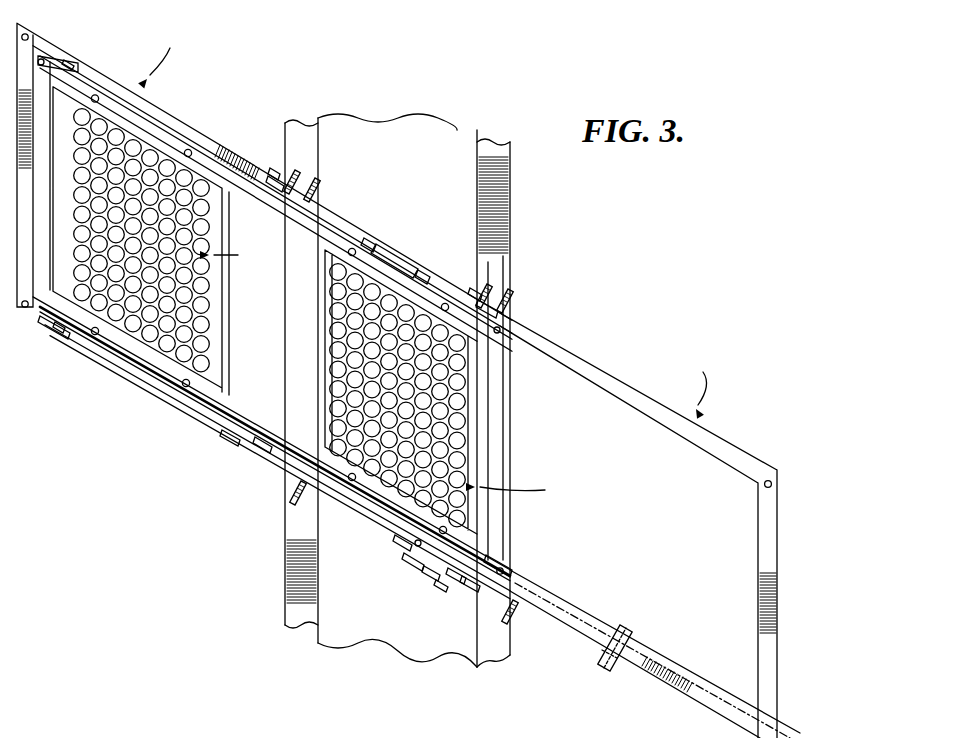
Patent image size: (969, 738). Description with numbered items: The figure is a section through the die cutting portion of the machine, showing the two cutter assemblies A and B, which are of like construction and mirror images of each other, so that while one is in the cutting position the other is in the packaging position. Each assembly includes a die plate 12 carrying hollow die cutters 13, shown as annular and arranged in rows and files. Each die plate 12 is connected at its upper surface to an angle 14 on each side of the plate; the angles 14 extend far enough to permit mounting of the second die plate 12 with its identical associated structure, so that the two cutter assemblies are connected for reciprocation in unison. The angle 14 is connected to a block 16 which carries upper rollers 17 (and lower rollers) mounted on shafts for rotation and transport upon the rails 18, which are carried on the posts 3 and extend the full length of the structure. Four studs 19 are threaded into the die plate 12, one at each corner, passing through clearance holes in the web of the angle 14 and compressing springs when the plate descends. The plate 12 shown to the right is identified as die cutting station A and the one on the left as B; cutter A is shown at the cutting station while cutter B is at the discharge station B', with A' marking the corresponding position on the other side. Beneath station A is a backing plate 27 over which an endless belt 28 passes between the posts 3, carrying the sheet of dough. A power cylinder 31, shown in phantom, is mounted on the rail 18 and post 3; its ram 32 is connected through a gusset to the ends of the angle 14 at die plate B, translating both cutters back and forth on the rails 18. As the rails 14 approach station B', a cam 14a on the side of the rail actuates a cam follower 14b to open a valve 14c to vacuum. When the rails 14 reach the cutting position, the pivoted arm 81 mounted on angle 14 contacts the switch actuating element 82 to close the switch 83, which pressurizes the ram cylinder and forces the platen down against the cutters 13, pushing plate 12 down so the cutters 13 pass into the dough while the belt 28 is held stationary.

The posts 3 is at (313, 180).
The die plate 12 is at (224, 288).
The hollow die cutters 13 is at (208, 323).
The angle 14 is at (237, 190).
The cam 14a is at (226, 436).
The cam follower 14b is at (402, 556).
The valve 14c is at (440, 580).
The block 16 is at (74, 60).
The upper rollers 17 is at (100, 66).
The rails 18 is at (594, 372).
The studs 19 is at (96, 95).
The backing plate 27 is at (500, 393).
The endless belt 28 is at (400, 128).
The power cylinder 31 is at (563, 590).
The ram 32 is at (135, 380).
The pivoted arm 81 is at (426, 268).
The switch actuating element 82 is at (378, 242).
The switch 83 is at (404, 256).
The cutter assembly A is at (512, 490).
The cutter assembly B is at (226, 255).
The direction of movement of panel A A' is at (693, 387).
The discharge station B' is at (161, 59).